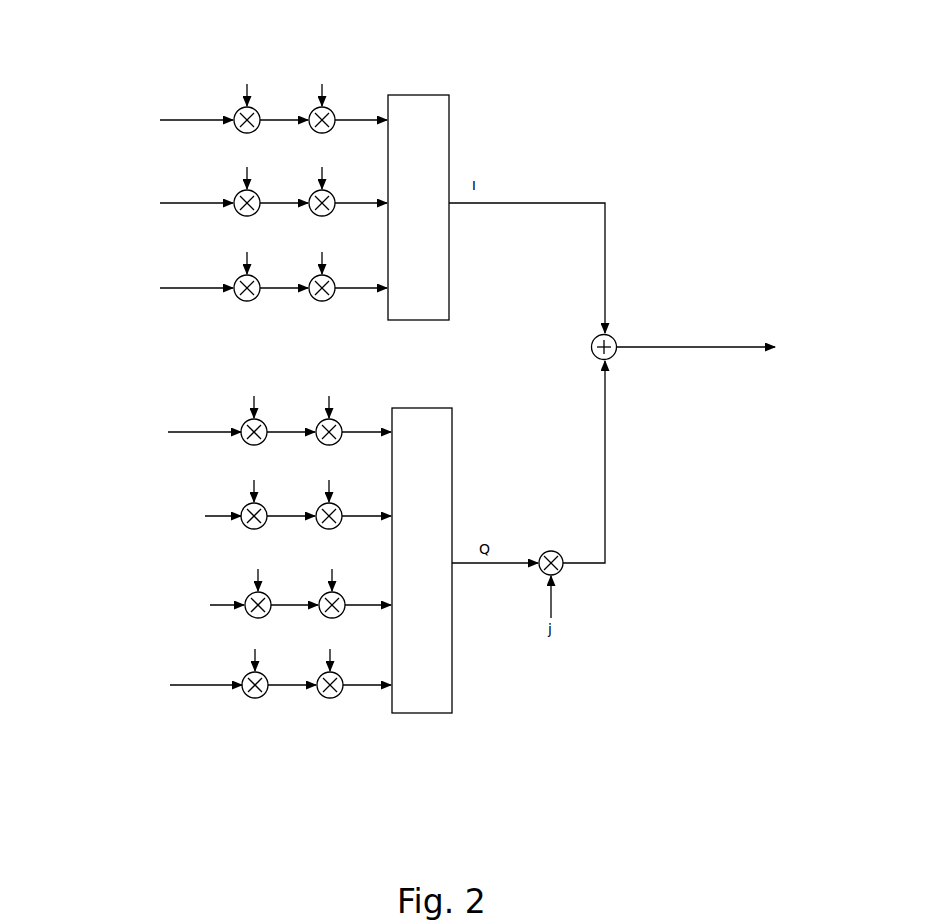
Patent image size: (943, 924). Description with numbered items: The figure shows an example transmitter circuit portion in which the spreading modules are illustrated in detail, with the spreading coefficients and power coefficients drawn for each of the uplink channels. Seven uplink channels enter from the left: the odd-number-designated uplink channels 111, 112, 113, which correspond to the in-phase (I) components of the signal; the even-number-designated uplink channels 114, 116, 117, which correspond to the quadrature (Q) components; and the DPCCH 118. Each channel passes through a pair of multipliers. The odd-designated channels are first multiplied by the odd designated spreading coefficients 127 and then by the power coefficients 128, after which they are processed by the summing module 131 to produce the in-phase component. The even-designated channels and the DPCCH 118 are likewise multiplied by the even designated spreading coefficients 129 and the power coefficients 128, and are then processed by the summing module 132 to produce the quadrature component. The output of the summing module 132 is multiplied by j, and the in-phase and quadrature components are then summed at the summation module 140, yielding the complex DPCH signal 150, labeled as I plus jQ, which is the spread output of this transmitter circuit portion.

The uplink channel 111 is at (110, 99).
The uplink channel 112 is at (111, 172).
The uplink channel 113 is at (113, 268).
The uplink channel 114 is at (113, 406).
The uplink channel 116 is at (113, 496).
The uplink channel 117 is at (115, 568).
The DPCCH 118 is at (113, 662).
The odd designated spreading coefficients 127 is at (242, 61).
The power coefficients 128 is at (315, 58).
The even designated spreading coefficients 129 is at (262, 713).
The summing module 131 is at (446, 95).
The summing module 132 is at (447, 407).
The summation module 140 is at (645, 296).
The DPCH signal 150 is at (738, 402).